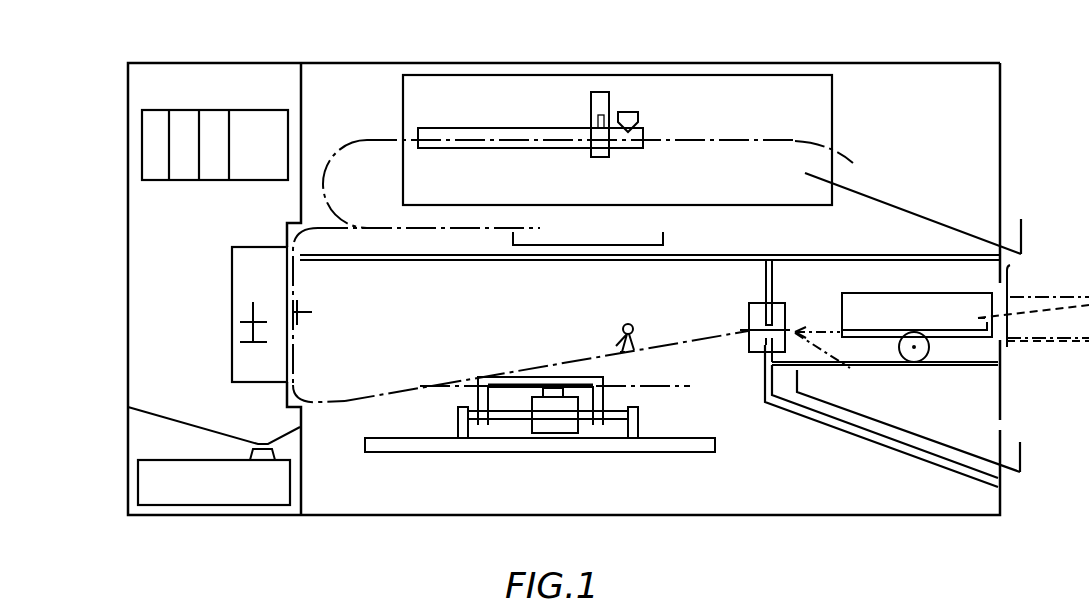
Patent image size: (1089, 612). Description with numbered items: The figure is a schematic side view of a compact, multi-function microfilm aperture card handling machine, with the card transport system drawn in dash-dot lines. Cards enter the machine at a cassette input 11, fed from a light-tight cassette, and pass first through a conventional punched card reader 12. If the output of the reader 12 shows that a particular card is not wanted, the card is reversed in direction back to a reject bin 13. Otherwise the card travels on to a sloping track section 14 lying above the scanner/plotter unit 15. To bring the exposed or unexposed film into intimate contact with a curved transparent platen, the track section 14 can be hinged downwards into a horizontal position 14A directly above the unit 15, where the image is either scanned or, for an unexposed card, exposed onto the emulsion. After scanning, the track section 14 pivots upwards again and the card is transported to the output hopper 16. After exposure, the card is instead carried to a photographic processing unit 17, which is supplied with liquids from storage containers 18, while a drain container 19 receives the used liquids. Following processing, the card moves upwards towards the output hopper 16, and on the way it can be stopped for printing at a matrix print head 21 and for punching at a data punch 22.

The cassette input 11 is at (978, 307).
The punched card reader 12 is at (752, 355).
The reject bin 13 is at (930, 437).
The track section 14 is at (678, 342).
The horizontal position 14A is at (672, 388).
The scanner/plotter unit 15 is at (572, 466).
The output hopper 16 is at (920, 210).
The photographic processing unit 17 is at (240, 280).
The storage containers 18 is at (155, 141).
The drain container 19 is at (150, 487).
The matrix print head 21 is at (638, 118).
The data punch 22 is at (600, 92).